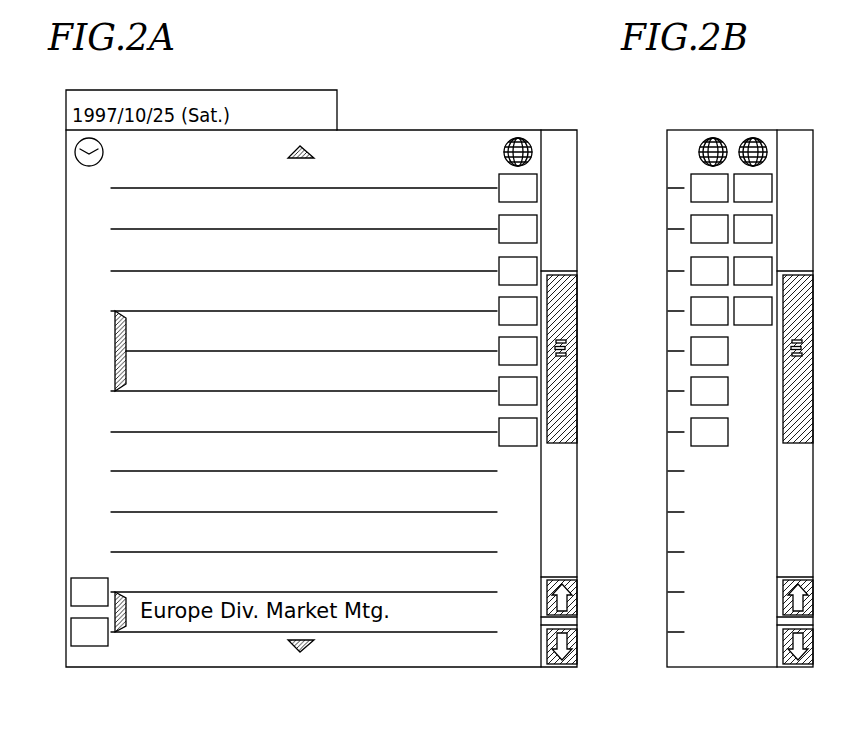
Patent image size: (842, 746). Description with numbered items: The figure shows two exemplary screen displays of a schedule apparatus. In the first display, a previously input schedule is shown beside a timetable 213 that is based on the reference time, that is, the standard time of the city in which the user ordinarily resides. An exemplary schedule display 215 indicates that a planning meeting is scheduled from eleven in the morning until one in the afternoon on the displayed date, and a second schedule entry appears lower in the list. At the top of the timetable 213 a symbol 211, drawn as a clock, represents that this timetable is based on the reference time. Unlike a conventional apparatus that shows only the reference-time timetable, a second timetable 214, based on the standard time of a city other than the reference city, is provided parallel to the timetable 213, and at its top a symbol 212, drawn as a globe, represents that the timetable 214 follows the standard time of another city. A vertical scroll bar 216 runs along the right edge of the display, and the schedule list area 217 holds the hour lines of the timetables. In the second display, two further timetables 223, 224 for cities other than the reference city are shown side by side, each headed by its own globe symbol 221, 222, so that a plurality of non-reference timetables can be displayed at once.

In FIG. 2A, the symbol 211 is at (74, 151).
In FIG. 2A, the symbol 212 is at (518, 138).
In FIG. 2A, the timetable 213 is at (73, 634).
In FIG. 2A, the timetable 214 is at (517, 646).
In FIG. 2A, the schedule display 215 is at (117, 333).
In FIG. 2A, the scroll bar 216 is at (560, 507).
In FIG. 2A, the schedule list display area with hour lines 217 is at (405, 252).
In FIG. 2B, the first globe icon (first time zone) 221 is at (710, 138).
In FIG. 2B, the second globe icon (second time zone) 222 is at (753, 138).
In FIG. 2B, the timetable 223 is at (708, 648).
In FIG. 2B, the timetable 224 is at (757, 648).